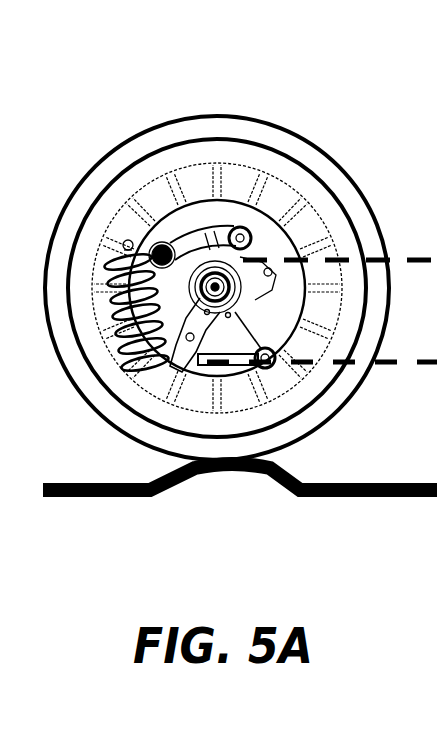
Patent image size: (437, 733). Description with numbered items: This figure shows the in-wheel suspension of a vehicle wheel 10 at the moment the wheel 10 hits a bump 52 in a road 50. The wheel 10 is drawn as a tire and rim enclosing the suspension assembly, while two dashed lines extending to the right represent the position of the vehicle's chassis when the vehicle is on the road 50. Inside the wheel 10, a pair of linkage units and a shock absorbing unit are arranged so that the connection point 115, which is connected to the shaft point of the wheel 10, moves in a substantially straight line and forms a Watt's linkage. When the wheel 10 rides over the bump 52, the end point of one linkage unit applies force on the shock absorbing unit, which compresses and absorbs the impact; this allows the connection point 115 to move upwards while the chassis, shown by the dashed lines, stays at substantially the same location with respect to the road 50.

The wheel 10 is at (147, 108).
The bump 52 is at (203, 480).
The road 50 is at (377, 497).
The connection point 115 is at (284, 365).